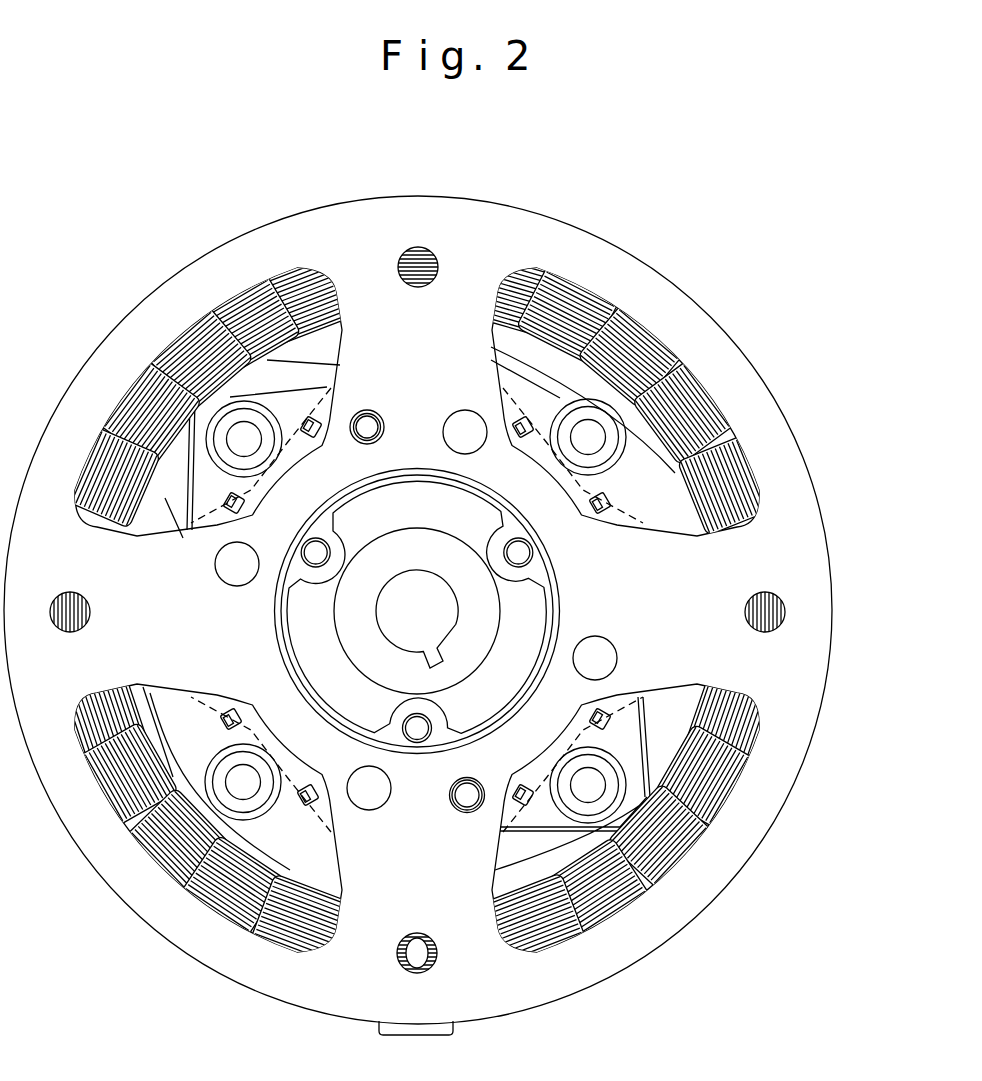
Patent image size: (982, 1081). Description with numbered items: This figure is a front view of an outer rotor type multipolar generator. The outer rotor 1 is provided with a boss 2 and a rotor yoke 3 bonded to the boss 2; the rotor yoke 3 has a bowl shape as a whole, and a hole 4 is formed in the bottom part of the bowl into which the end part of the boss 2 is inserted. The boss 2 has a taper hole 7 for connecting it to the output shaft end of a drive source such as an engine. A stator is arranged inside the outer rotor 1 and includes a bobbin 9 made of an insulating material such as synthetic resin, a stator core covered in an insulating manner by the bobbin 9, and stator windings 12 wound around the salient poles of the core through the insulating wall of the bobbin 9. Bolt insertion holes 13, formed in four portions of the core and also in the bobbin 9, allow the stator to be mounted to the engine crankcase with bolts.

The outer rotor 1 is at (818, 725).
The boss 2 is at (543, 578).
The rotor yoke 3 is at (693, 897).
The hole 4 is at (437, 752).
The taper hole 7 is at (447, 617).
The bobbin 9 is at (307, 848).
The stator windings 12 is at (223, 897).
The bolt insertion holes 13 is at (232, 432).